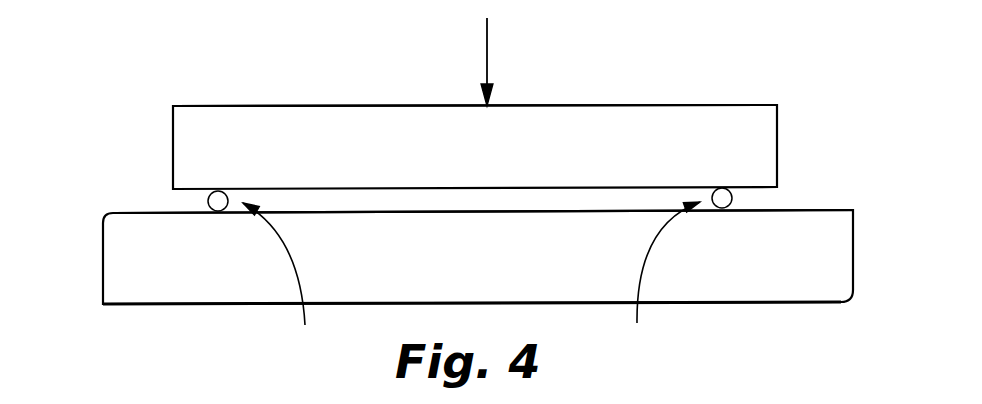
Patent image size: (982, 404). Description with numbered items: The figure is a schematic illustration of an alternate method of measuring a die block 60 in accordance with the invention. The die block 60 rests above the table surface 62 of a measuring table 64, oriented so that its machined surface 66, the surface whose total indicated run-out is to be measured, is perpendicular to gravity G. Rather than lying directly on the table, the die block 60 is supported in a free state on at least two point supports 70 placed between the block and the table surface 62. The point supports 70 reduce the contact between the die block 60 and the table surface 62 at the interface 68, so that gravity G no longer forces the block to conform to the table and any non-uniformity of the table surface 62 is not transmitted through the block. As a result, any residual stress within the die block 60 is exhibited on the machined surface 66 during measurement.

The die block 60 is at (770, 130).
The table surface 62 is at (142, 210).
The measuring table 64 is at (845, 238).
The machined surface 66 is at (438, 117).
The interface 68 is at (471, 279).
The point supports 70 is at (208, 200).
The gravity G is at (487, 33).